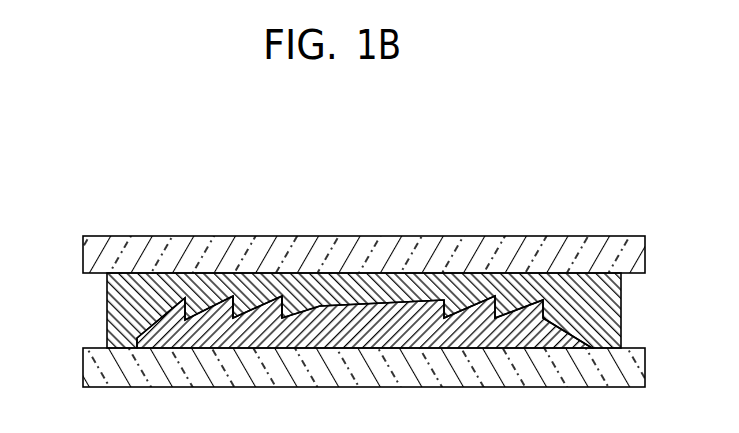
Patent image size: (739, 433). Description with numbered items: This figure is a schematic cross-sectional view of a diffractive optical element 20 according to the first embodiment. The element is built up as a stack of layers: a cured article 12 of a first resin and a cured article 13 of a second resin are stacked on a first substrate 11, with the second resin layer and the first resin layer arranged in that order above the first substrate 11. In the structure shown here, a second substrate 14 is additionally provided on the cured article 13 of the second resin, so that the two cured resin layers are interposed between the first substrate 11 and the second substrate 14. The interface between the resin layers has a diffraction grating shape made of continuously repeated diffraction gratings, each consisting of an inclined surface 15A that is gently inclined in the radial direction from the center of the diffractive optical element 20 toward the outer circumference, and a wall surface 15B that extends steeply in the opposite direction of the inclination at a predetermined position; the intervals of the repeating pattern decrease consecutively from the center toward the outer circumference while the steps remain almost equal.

The diffractive optical element 20 is at (364, 155).
The second substrate 14 is at (100, 248).
The cured article of second resin 13 is at (115, 292).
The cured article of first resin 12 is at (137, 330).
The first substrate 11 is at (105, 372).
The inclined surface 15A is at (268, 300).
The wall surface 15B is at (213, 300).